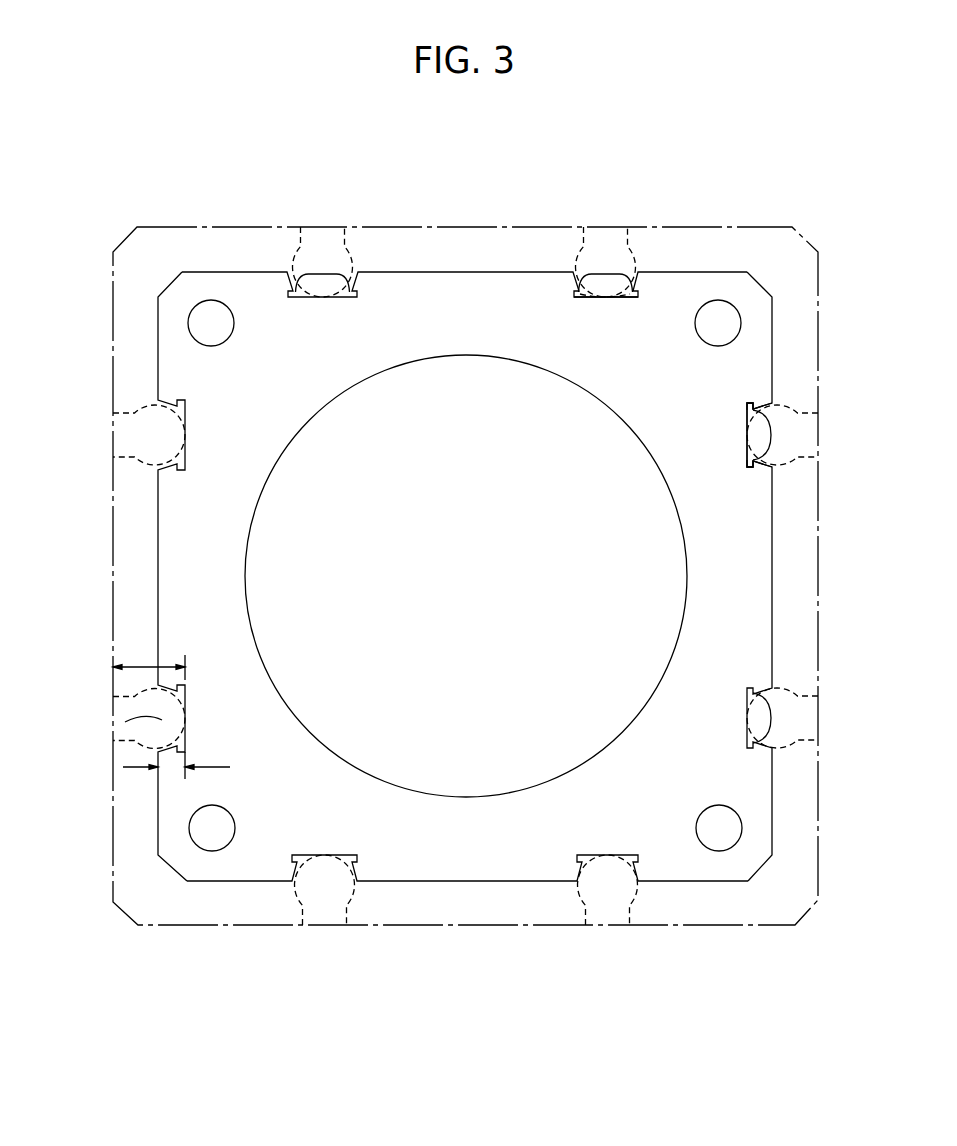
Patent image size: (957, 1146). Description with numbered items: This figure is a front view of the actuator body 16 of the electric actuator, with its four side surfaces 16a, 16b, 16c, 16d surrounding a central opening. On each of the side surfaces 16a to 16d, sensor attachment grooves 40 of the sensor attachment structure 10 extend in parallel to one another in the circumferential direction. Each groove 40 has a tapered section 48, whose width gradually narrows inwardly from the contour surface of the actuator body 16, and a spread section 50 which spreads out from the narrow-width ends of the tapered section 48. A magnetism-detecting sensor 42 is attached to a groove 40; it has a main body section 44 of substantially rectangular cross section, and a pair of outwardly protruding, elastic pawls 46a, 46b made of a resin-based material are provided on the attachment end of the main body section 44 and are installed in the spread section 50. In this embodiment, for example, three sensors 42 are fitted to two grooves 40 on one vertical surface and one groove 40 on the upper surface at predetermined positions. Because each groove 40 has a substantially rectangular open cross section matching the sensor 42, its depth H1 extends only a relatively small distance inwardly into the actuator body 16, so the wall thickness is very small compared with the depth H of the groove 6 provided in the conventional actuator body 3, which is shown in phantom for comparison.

The conventional actuator body 3 is at (184, 927).
The groove 6 is at (135, 727).
The sensor attachment structure 10 is at (587, 252).
The actuator body 16 is at (462, 560).
The side surface 16a is at (474, 270).
The side surface 16b is at (774, 597).
The side surface 16c is at (480, 883).
The side surface 16d is at (157, 557).
The sensor attachment groove 40 is at (598, 277).
The magnetism-detecting sensor 42 is at (323, 280).
The main body section 44 is at (746, 432).
The pawl 46a is at (748, 405).
The pawl 46b is at (750, 466).
The tapered section 48 is at (634, 285).
The spread section 50 is at (628, 299).
The depth of groove H is at (149, 659).
The depth of groove H1 is at (176, 758).